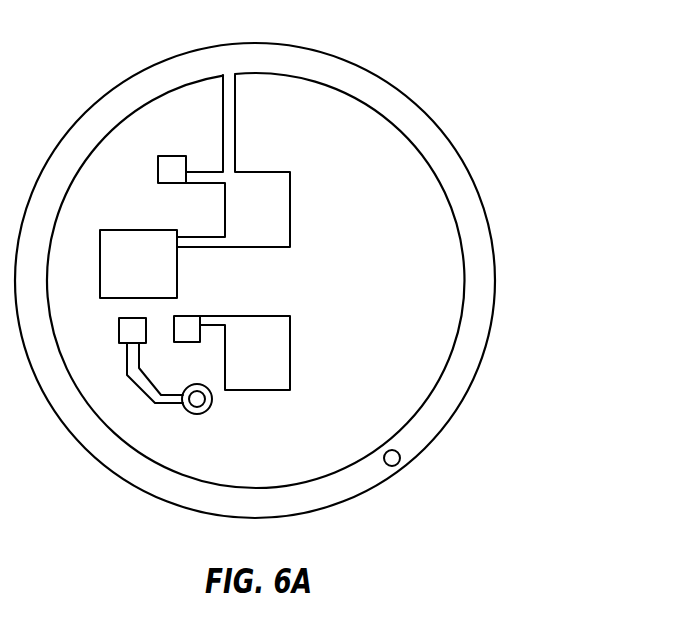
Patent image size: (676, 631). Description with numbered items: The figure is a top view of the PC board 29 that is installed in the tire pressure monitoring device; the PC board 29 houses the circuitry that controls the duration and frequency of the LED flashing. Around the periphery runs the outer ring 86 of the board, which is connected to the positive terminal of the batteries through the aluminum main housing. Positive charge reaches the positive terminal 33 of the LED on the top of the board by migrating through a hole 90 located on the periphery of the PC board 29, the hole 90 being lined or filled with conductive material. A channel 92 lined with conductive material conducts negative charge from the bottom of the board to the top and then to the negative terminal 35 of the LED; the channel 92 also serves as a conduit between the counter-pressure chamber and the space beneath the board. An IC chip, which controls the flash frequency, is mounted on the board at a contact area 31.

The PC board 29 is at (440, 63).
The contact area 31 is at (148, 242).
The positive terminal 33 is at (275, 208).
The negative terminal 35 is at (275, 352).
The outer ring 86 is at (462, 187).
The hole 90 is at (392, 462).
The channel 92 is at (197, 402).